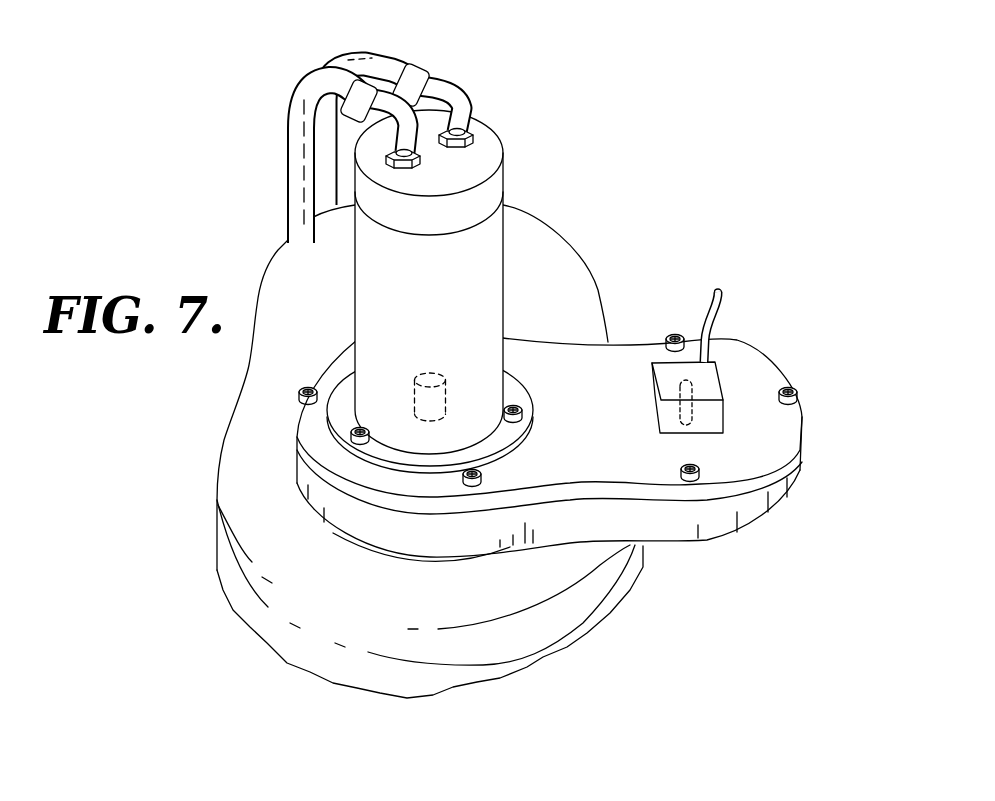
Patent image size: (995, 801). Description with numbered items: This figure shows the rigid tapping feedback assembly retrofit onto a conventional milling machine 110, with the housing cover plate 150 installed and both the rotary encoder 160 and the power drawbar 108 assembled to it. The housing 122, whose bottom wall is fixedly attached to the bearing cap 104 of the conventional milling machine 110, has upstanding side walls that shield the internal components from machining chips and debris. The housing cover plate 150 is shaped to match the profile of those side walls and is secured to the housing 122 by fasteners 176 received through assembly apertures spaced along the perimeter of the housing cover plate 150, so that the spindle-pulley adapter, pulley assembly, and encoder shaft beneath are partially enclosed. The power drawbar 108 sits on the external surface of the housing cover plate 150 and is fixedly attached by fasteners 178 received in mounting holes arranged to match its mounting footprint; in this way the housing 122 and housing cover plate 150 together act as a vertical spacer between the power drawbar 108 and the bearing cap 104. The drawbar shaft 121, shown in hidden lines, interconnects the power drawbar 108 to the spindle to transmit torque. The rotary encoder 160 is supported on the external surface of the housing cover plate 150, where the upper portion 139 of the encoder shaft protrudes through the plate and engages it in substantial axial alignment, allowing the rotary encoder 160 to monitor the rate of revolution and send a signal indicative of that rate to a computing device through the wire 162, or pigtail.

The bearing cap 104 is at (391, 558).
The power drawbar 108 is at (505, 222).
The conventional milling machine 110 is at (218, 574).
The drawbar shaft 121 is at (431, 372).
The housing 122 is at (791, 489).
The upper portion 139 is at (694, 408).
The housing cover plate 150 is at (801, 437).
The rotary encoder 160 is at (722, 383).
The wire 162 is at (724, 299).
The fasteners 176 is at (306, 385).
The fasteners 178 is at (357, 436).